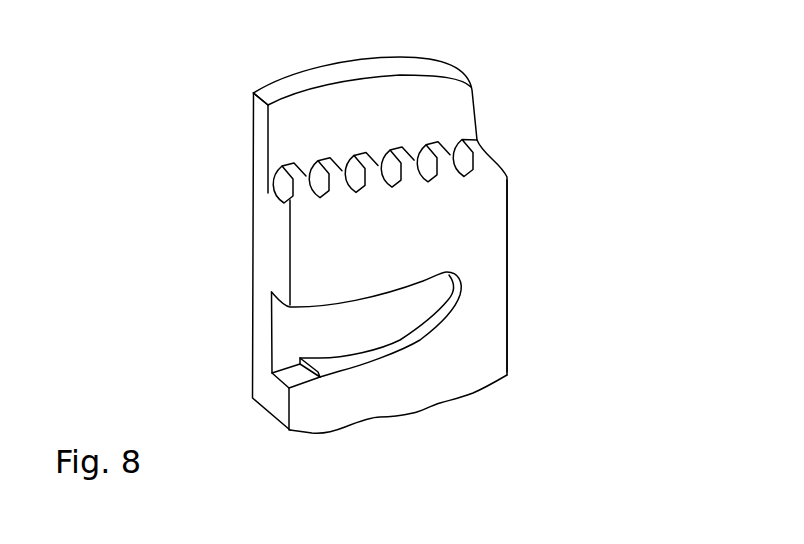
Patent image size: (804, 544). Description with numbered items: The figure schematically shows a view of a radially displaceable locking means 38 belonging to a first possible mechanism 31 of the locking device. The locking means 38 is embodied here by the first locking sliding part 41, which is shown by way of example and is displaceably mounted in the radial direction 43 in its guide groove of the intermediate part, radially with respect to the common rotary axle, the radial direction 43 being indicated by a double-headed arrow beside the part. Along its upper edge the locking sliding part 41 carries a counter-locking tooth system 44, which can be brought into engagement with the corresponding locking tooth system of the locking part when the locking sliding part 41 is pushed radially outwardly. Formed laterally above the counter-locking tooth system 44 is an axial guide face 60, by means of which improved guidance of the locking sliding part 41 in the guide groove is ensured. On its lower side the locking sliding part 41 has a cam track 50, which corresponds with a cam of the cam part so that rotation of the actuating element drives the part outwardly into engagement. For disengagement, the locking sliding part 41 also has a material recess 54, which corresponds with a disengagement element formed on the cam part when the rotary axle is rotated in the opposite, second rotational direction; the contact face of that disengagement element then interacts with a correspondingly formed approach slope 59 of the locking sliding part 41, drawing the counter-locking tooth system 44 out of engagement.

The first possible mechanism 31 is at (123, 328).
The locking means 38 is at (549, 66).
The first locking sliding part 41 is at (508, 233).
The radial direction 43 is at (634, 186).
The counter-locking tooth system 44 is at (498, 139).
The cam track 50 is at (427, 427).
The material recess 54 is at (284, 352).
The approach slope 59 is at (391, 331).
The axial guide face 60 is at (356, 97).